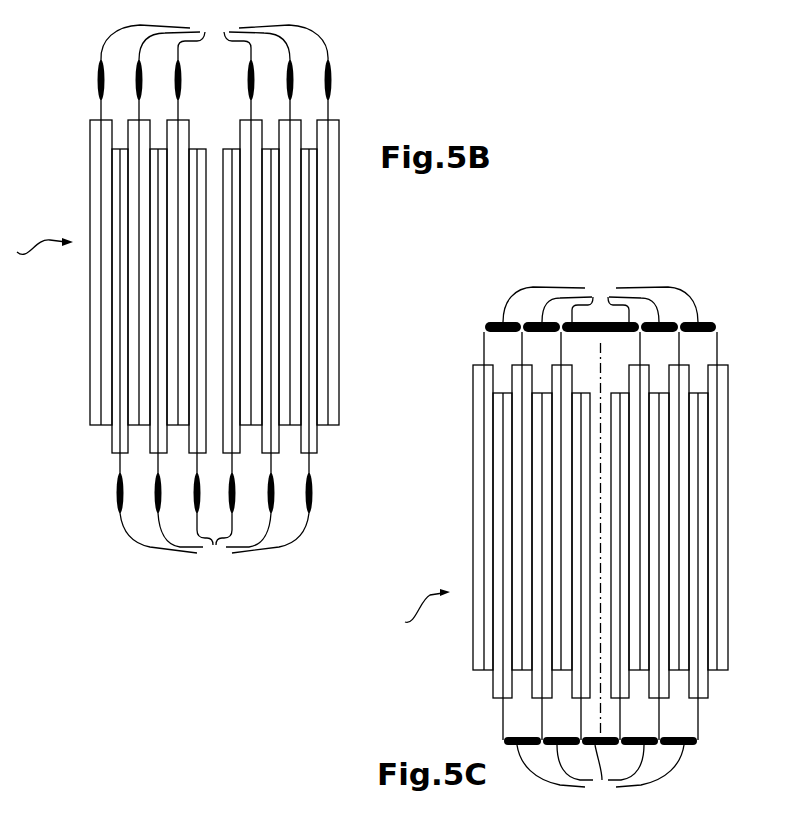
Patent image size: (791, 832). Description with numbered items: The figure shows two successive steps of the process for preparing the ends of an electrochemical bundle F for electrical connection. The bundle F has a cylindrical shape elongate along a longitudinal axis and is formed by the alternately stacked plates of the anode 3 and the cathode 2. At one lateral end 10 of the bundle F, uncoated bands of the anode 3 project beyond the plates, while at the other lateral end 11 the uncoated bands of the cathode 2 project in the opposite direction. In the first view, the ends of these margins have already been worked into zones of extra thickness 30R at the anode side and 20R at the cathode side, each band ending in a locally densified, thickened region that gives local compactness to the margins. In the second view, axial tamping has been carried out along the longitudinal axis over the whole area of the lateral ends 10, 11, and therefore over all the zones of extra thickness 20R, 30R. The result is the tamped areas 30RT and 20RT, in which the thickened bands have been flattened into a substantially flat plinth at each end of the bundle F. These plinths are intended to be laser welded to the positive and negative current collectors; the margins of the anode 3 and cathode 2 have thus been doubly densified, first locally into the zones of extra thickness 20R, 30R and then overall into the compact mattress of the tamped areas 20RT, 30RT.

In FIG. 5B, the cathode 2 is at (110, 435).
In FIG. 5C, the cathode 2 is at (600, 545).
In FIG. 5B, the anode 3 is at (90, 160).
In FIG. 5C, the anode 3 is at (600, 517).
In FIG. 5B, the lateral end 10 is at (318, 108).
In FIG. 5C, the lateral end 10 is at (708, 350).
In FIG. 5B, the lateral end 11 is at (297, 464).
In FIG. 5C, the lateral end 11 is at (685, 717).
In FIG. 5B, the zone of extra thickness 20R is at (214, 547).
In FIG. 5B, the zone of extra thickness 30R is at (214, 32).
In FIG. 5C, the tamped area 20RT is at (600, 780).
In FIG. 5C, the tamped area 30RT is at (600, 290).
In FIG. 5B, the electrochemical bundle F is at (39, 243).
In FIG. 5C, the electrochemical bundle F is at (420, 608).